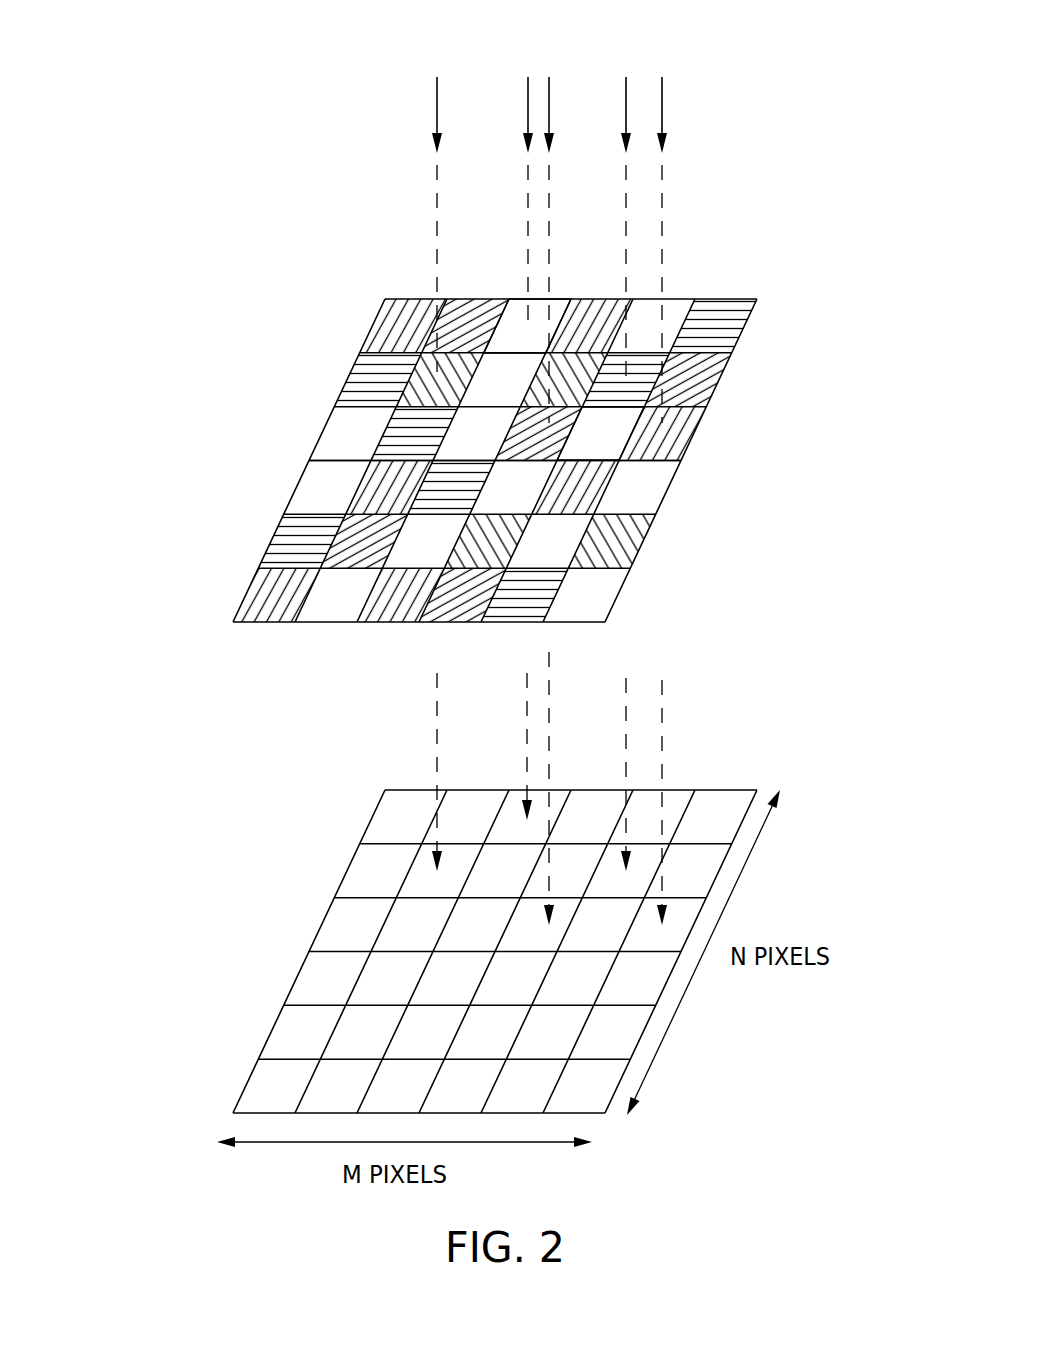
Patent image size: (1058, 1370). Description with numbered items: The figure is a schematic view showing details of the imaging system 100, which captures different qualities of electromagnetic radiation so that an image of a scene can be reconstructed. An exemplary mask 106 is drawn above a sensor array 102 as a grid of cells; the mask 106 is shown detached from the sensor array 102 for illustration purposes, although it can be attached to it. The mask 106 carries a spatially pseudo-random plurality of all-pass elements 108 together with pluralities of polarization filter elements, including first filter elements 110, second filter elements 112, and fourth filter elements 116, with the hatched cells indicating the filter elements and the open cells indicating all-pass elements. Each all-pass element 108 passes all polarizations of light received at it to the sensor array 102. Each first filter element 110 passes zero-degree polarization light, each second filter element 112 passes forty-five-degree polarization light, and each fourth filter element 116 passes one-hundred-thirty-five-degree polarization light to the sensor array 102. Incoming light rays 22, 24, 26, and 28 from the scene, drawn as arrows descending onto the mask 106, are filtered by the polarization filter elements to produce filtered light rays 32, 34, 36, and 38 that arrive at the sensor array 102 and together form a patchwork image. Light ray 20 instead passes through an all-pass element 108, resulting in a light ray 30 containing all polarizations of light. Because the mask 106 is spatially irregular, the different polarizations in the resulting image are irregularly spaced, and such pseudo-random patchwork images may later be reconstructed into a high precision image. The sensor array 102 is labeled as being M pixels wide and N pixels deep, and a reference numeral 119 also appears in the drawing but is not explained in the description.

The light ray 20 is at (528, 100).
The light ray 22 is at (437, 107).
The light ray 24 is at (549, 100).
The light ray 26 is at (626, 95).
The light ray 28 is at (662, 95).
The light ray 30 is at (527, 725).
The filtered light ray 32 is at (437, 709).
The filtered light ray 34 is at (549, 695).
The filtered light ray 36 is at (626, 715).
The filtered light ray 38 is at (662, 730).
The imaging system 100 is at (208, 1201).
The sensor array 102 is at (735, 790).
The mask 106 is at (678, 465).
The all-pass element 108 is at (525, 310).
The first filter element 110 is at (603, 407).
The second filter element 112 is at (522, 460).
The fourth filter element 116 is at (407, 380).
The filter element 119 is at (697, 427).